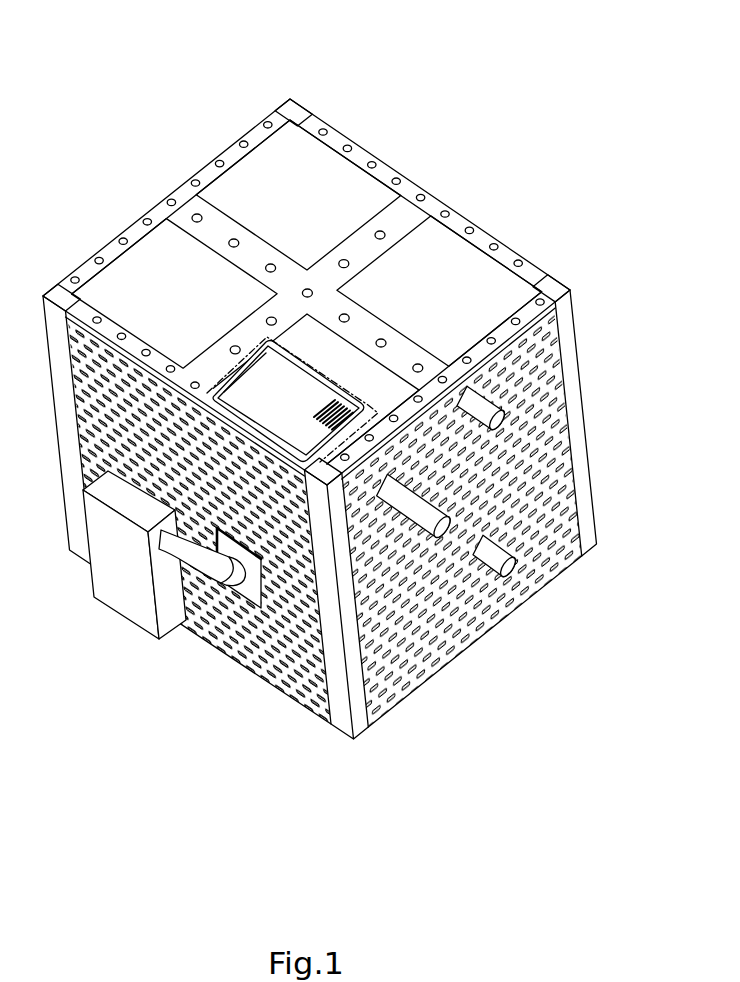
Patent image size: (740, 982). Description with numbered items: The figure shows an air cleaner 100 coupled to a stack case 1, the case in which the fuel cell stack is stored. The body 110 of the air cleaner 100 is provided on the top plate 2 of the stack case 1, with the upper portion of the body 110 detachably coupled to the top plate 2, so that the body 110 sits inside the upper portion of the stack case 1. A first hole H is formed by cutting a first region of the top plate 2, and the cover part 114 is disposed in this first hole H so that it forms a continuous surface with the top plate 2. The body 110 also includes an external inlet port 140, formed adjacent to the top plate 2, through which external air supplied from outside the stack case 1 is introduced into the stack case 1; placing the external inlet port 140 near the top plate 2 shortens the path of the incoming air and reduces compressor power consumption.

The stack case 1 is at (388, 70).
The body 110 is at (413, 110).
The top plate 2 is at (338, 186).
The cover part 114 is at (302, 390).
The air cleaner 100 is at (336, 368).
The external inlet port 140 is at (340, 401).
The first hole H is at (253, 352).